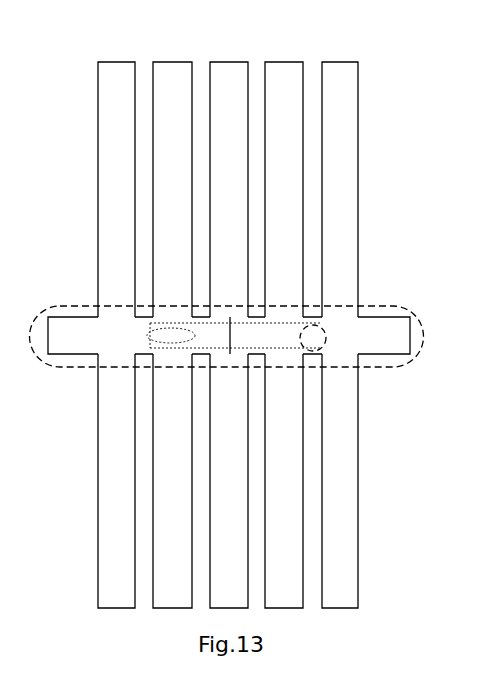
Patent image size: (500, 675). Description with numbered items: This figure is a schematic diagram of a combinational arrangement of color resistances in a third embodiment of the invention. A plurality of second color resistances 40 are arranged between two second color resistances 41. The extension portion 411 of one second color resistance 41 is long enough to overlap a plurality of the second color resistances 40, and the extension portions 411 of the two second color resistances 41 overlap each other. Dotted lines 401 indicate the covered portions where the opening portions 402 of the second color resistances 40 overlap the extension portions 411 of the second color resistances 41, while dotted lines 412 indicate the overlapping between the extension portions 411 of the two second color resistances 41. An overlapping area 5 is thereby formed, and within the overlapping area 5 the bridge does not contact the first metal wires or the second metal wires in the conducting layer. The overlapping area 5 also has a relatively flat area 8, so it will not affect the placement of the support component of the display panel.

The overlapping area 5 is at (423, 330).
The relatively flat area 8 is at (323, 343).
The second color resistances 40 is at (170, 62).
The second color resistances 41 is at (112, 62).
The dotted lines 401 is at (283, 350).
The opening portions 402 is at (150, 332).
The extension portion 411 is at (385, 316).
The dotted lines 412 is at (226, 332).